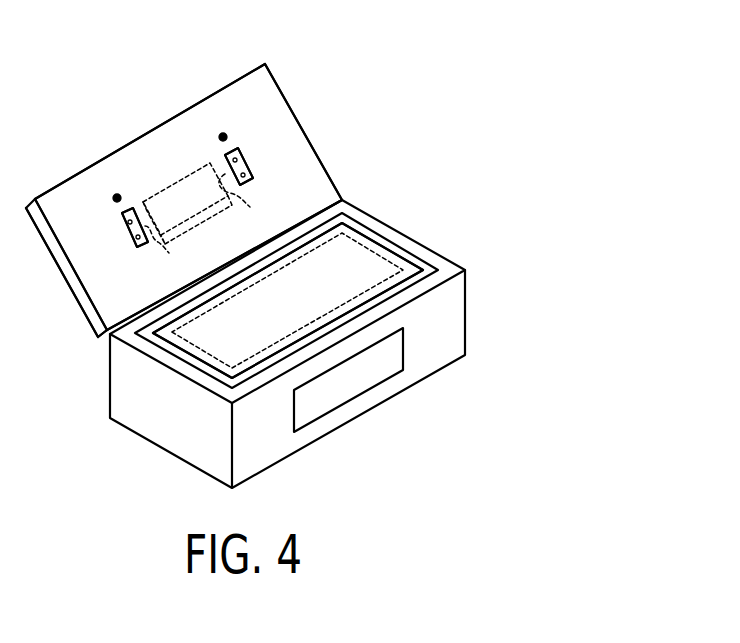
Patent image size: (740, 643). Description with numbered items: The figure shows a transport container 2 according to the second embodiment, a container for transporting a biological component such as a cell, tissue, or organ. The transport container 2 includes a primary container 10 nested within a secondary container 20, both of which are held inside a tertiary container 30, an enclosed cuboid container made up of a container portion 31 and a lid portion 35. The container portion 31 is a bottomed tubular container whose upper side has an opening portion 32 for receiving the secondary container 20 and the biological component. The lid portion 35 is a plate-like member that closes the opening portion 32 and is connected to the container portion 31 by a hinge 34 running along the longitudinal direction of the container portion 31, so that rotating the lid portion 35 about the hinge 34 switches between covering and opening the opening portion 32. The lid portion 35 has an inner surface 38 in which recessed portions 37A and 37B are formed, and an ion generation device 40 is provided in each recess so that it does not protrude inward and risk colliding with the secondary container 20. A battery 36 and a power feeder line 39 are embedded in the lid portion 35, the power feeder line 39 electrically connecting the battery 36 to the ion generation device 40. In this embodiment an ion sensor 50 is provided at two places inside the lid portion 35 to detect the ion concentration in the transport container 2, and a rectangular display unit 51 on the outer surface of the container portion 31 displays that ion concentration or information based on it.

The transport container 2 is at (65, 78).
The primary container 10 is at (378, 258).
The secondary container 20 is at (367, 243).
The tertiary container 30 is at (245, 276).
The container portion 31 is at (397, 158).
The opening portion 32 is at (204, 337).
The hinge 34 is at (98, 340).
The lid portion 35 is at (327, 183).
The battery 36 is at (178, 183).
The recessed portion 37A is at (121, 220).
The recessed portion 37B is at (253, 172).
The inner surface 38 is at (210, 100).
The power feeder line 39 is at (208, 218).
The ion generation device 40 is at (135, 246).
The ion sensor 50 is at (116, 201).
The display unit 51 is at (403, 350).